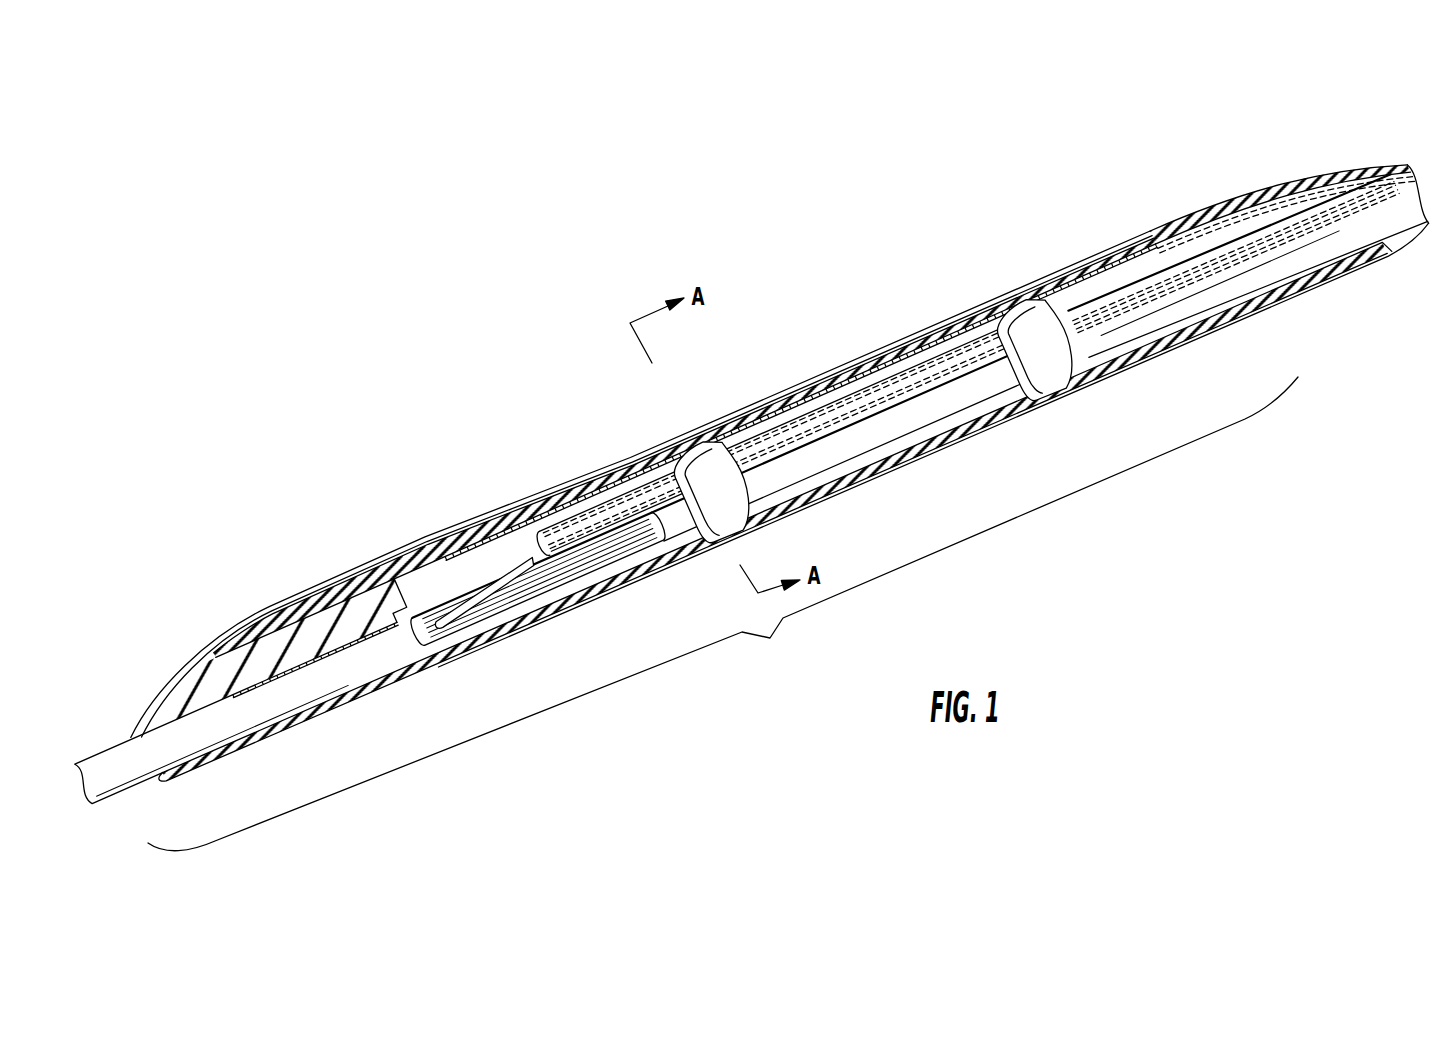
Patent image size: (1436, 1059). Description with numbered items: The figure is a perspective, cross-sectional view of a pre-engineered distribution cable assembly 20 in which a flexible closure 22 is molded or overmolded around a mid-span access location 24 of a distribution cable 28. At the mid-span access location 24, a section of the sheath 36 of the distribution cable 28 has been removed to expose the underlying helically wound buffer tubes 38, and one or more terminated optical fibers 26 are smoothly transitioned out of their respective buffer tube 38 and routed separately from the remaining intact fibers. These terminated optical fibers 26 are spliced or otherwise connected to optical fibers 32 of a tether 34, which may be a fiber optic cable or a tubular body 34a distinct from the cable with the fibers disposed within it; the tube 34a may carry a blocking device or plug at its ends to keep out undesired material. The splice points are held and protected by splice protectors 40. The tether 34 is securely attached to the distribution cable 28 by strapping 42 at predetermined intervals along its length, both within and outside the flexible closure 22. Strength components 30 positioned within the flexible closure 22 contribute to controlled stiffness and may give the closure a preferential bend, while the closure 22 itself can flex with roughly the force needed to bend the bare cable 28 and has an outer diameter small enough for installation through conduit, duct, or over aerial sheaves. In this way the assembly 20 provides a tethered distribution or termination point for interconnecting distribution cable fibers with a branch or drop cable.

The distribution cable assembly 20 is at (523, 313).
The flexible closure 22 is at (233, 663).
The mid-span access location 24 is at (723, 614).
The terminated optical fibers 26 is at (480, 583).
The distribution cable 28 is at (90, 758).
The strength components 30 is at (345, 598).
The optical fibers of the tether 32 is at (932, 378).
The tether 34 is at (1397, 170).
The tubular body 34a is at (633, 497).
The sheath 36 is at (195, 737).
The buffer tubes 38 is at (570, 585).
The splice protectors 40 is at (663, 500).
The strapping 42 is at (702, 447).